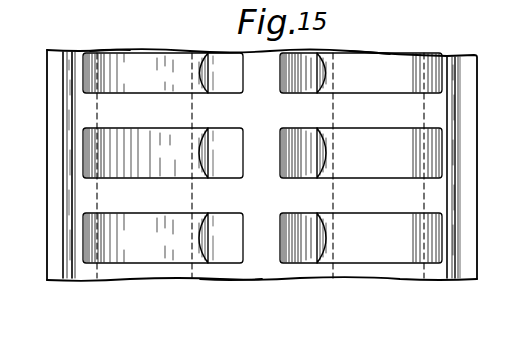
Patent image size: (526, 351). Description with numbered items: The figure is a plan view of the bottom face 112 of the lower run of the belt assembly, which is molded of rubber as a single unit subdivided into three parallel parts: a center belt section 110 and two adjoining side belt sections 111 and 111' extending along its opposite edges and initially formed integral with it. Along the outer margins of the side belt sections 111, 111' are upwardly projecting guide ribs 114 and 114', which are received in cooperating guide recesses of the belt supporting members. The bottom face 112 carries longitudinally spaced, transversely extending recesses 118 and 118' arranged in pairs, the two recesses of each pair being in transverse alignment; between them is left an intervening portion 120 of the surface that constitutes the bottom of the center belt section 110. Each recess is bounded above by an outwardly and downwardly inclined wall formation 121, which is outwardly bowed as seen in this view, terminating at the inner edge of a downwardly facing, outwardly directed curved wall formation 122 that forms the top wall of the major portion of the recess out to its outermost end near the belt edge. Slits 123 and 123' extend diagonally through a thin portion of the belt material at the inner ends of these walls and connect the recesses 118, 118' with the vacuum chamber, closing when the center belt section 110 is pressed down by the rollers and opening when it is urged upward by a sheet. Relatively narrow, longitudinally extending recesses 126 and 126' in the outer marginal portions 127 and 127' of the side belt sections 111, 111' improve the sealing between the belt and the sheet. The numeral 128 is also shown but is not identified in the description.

The center belt section 110 is at (247, 62).
The side belt section 111 is at (377, 40).
The side belt section 111' is at (119, 38).
The bottom face 112 is at (440, 108).
The guide rib 114 is at (462, 146).
The guide rib 114' is at (58, 153).
The recess 118 is at (333, 198).
The recess 118' is at (185, 193).
The intervening portion 120 is at (266, 278).
The inclined wall formation 121 is at (197, 148).
The curved wall formation 122 is at (152, 81).
The slit 123 is at (304, 115).
The slit 123' is at (262, 158).
The longitudinally extending recess 126 is at (483, 167).
The longitudinally extending recess 126' is at (38, 165).
The outer marginal portion 127 is at (480, 167).
The outer marginal portion 127' is at (34, 165).
The frame 128 is at (46, 8).